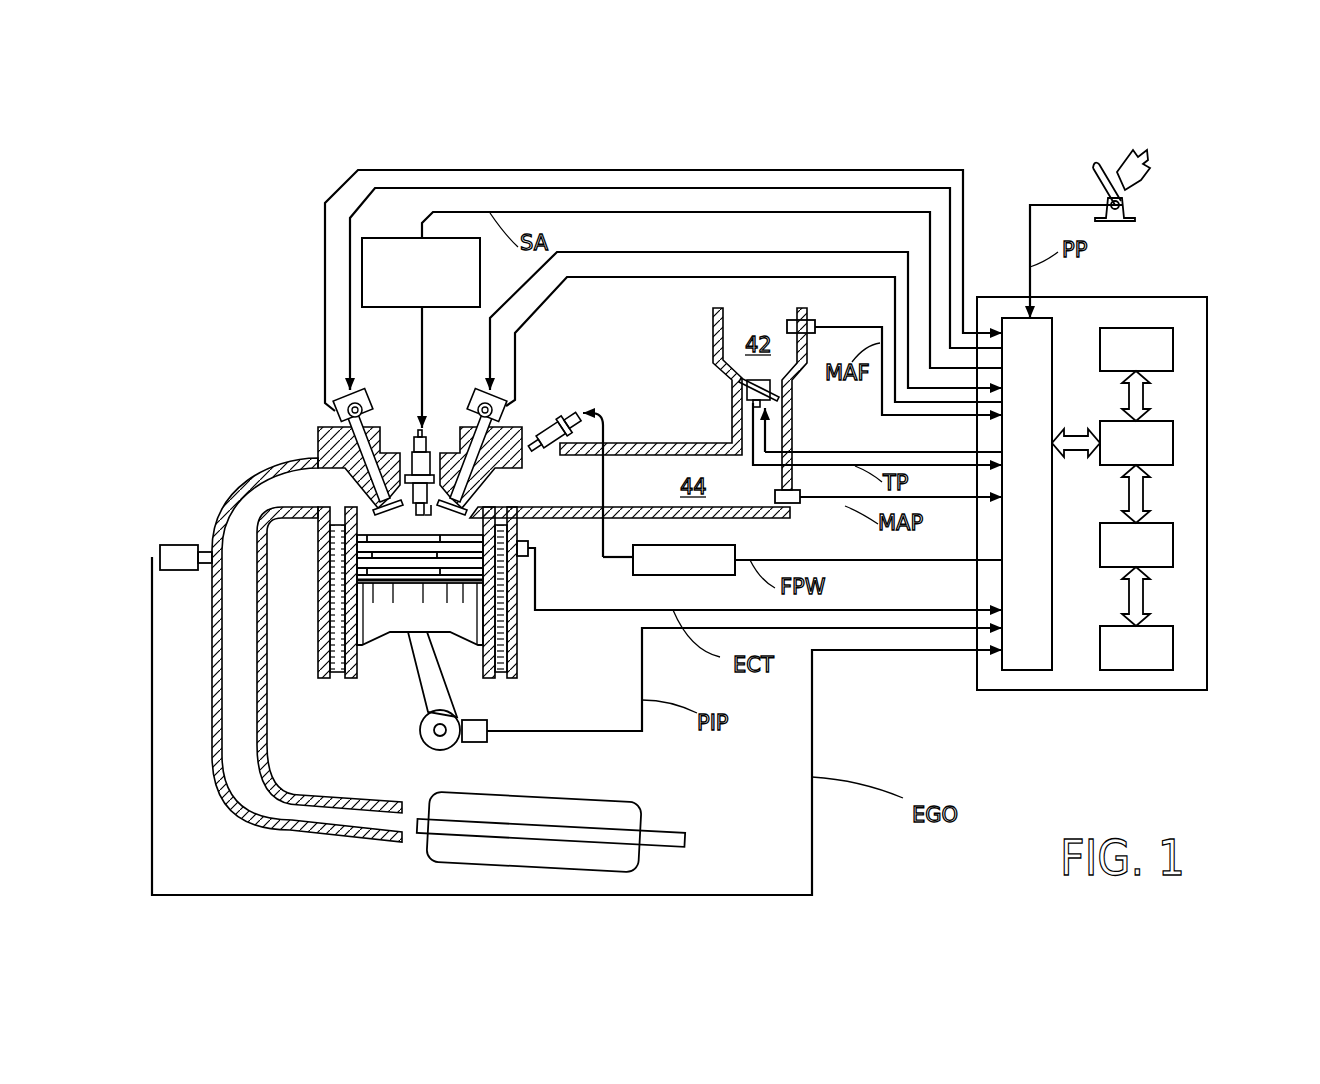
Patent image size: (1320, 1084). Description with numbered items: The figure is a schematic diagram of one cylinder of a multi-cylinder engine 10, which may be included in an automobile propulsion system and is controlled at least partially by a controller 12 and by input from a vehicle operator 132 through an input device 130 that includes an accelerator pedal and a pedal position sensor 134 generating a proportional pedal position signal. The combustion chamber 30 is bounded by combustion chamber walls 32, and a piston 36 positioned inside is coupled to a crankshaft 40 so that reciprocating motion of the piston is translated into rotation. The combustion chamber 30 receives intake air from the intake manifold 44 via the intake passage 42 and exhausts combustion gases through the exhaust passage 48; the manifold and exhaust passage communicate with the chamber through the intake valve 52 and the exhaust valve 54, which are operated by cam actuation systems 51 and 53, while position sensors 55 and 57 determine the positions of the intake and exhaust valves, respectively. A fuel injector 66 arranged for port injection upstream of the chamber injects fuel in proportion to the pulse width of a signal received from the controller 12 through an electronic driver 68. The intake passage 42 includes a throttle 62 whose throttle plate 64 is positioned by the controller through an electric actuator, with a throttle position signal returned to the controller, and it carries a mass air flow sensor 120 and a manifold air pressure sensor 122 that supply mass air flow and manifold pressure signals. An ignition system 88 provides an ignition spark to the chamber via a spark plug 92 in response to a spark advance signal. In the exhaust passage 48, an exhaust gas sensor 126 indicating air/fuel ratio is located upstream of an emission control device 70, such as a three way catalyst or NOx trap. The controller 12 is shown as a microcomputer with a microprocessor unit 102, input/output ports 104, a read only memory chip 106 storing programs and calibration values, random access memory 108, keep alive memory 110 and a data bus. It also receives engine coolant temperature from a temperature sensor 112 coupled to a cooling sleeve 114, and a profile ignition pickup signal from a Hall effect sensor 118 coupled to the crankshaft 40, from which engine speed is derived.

The engine 10 is at (254, 382).
The controller 12 is at (1195, 297).
The combustion chamber 30 is at (417, 527).
The combustion chamber walls 32 is at (360, 665).
The piston 36 is at (422, 622).
The crankshaft 40 is at (430, 753).
The intake passage 42 is at (794, 399).
The intake manifold 44 is at (630, 413).
The exhaust passage 48 is at (301, 500).
The cam actuation system 51 is at (478, 394).
The intake valve 52 is at (464, 498).
The cam actuation system 53 is at (362, 400).
The exhaust valve 54 is at (322, 465).
The position sensor 55 is at (503, 413).
The position sensor 57 is at (337, 415).
The throttle 62 is at (778, 391).
The throttle plate 64 is at (736, 386).
The fuel injector 66 is at (557, 420).
The electronic driver 68 is at (662, 577).
The emission control device 70 is at (590, 797).
The ignition system 88 is at (368, 240).
The spark plug 92 is at (426, 428).
The microprocessor unit 102 is at (1175, 440).
The input/output ports 104 is at (1052, 325).
The read only memory chip 106 is at (1173, 345).
The random access memory 108 is at (1173, 545).
The keep alive memory 110 is at (1173, 650).
The temperature sensor 112 is at (533, 547).
The cooling sleeve 114 is at (497, 620).
The Hall effect sensor 118 is at (477, 743).
The mass air flow sensor 120 is at (800, 318).
The manifold air pressure sensor 122 is at (795, 508).
The exhaust gas sensor 126 is at (160, 550).
The input device 130 is at (1095, 183).
The vehicle operator 132 is at (1148, 166).
The pedal position sensor 134 is at (1127, 207).